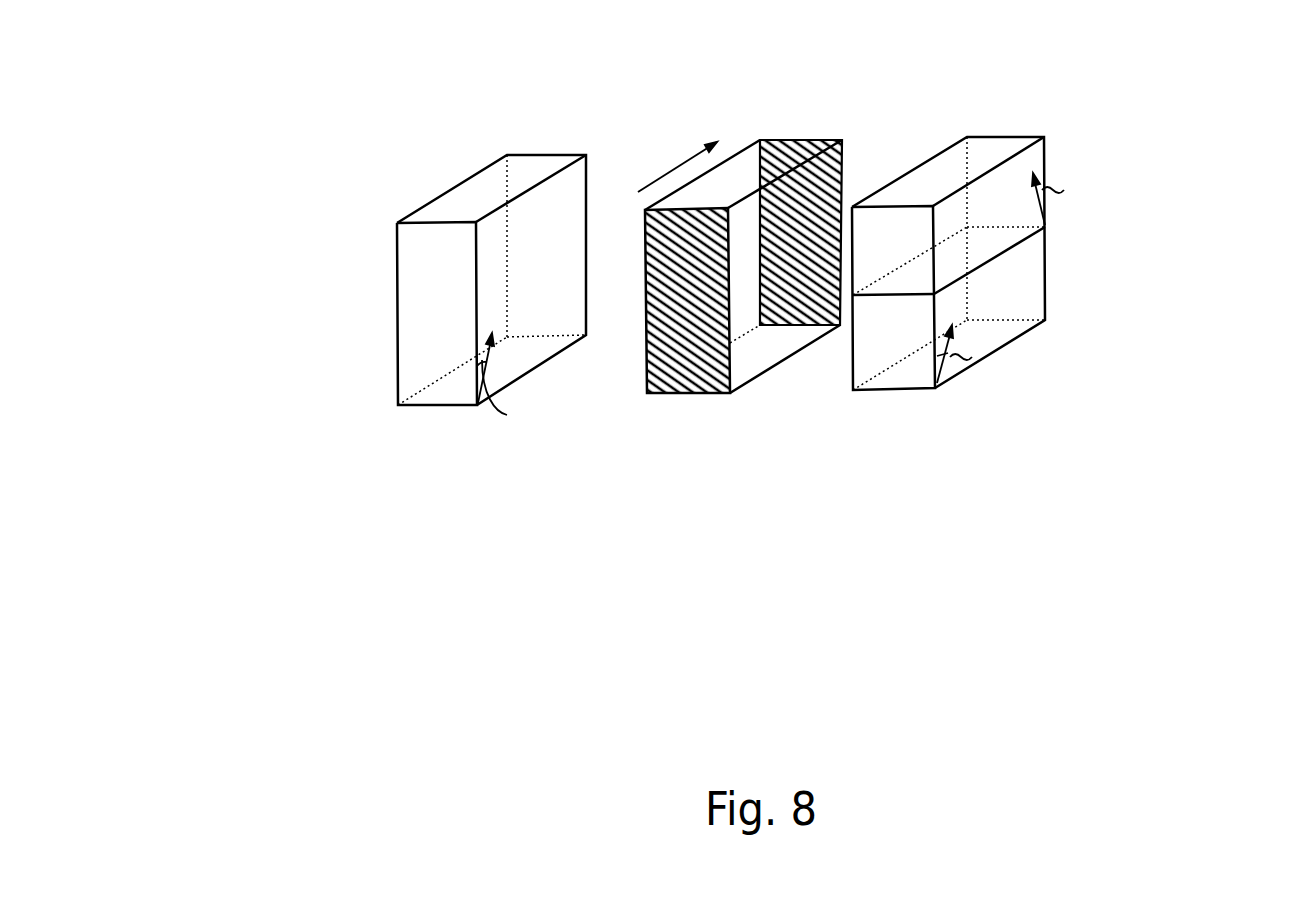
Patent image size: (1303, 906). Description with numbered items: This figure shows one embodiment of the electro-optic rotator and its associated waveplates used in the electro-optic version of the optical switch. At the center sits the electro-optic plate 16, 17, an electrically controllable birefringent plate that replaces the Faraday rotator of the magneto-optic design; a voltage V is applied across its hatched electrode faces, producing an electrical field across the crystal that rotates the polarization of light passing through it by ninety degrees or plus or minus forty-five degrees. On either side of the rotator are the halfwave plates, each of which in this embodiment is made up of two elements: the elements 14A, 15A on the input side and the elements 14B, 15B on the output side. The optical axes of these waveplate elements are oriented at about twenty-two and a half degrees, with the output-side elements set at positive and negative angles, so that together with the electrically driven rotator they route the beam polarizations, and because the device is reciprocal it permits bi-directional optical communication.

The halfwave plate element 14A is at (381, 264).
The halfwave plate element 15A is at (381, 264).
The electro-optic rotator 16 is at (721, 263).
The electro-optic plate electrodes 17 is at (721, 263).
The halfwave plate element 14B is at (1055, 241).
The halfwave plate element 15B is at (1055, 241).
The applied voltage V is at (810, 327).